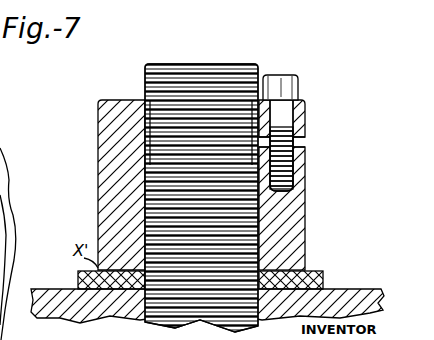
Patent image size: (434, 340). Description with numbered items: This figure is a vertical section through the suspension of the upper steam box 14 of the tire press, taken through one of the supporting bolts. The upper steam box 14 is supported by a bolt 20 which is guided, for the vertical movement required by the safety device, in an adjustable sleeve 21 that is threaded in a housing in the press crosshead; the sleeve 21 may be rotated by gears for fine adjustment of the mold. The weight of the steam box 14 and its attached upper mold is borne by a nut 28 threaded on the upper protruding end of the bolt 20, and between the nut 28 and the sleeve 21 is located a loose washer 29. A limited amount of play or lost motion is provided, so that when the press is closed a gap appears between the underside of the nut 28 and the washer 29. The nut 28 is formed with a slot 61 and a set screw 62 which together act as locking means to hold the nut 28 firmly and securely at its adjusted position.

The upper steam box 14 is at (0, 111).
The bolt 20 is at (235, 72).
The adjustable sleeve 21 is at (350, 293).
The nut 28 is at (297, 203).
The loose washer 29 is at (320, 270).
The slot 61 is at (297, 147).
The set screw 62 is at (284, 112).